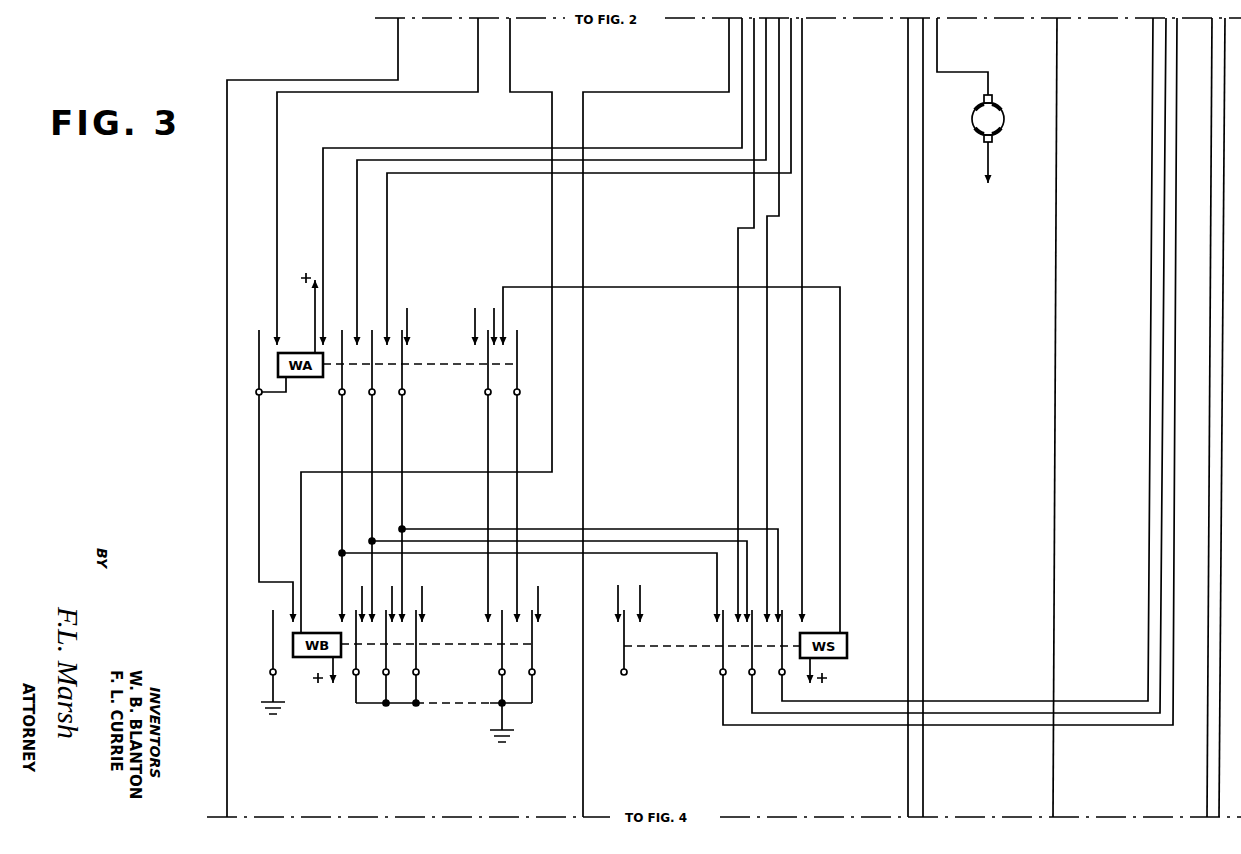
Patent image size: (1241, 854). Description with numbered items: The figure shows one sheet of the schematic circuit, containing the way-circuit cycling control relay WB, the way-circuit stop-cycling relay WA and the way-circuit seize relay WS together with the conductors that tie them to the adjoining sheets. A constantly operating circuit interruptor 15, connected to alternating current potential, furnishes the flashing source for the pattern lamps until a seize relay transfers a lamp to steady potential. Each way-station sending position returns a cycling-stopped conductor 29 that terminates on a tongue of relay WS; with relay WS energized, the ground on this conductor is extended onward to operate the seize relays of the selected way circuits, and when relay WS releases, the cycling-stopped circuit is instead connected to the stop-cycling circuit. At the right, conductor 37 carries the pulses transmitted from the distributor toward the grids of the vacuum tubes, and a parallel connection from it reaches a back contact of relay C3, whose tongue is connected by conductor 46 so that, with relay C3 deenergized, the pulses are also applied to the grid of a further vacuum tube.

The circuit interruptor 15 is at (973, 118).
The cycling-stopped conductor 29 is at (975, 701).
The conductor 37 is at (1210, 336).
The conductor 46 is at (1218, 752).